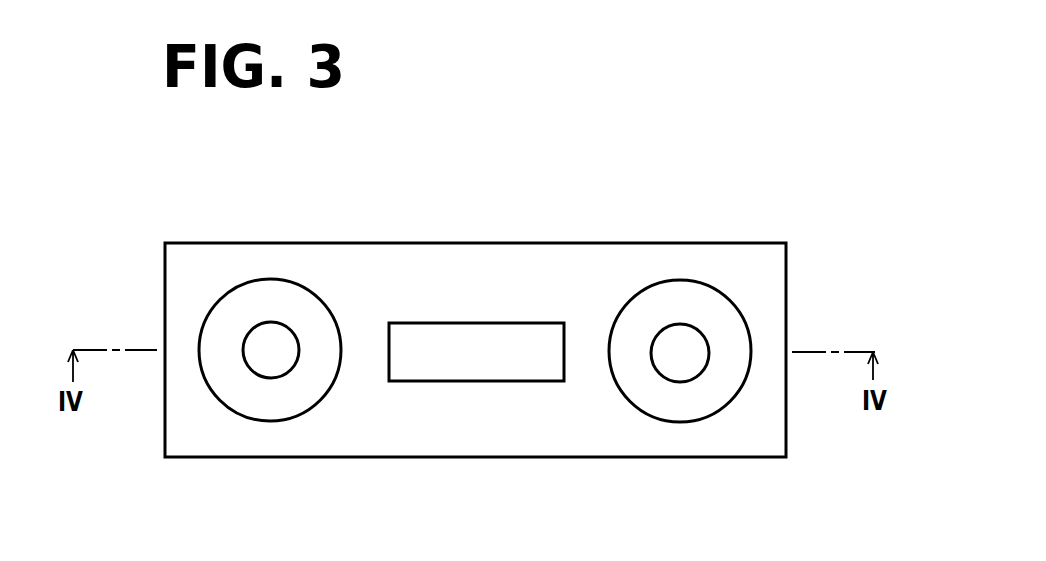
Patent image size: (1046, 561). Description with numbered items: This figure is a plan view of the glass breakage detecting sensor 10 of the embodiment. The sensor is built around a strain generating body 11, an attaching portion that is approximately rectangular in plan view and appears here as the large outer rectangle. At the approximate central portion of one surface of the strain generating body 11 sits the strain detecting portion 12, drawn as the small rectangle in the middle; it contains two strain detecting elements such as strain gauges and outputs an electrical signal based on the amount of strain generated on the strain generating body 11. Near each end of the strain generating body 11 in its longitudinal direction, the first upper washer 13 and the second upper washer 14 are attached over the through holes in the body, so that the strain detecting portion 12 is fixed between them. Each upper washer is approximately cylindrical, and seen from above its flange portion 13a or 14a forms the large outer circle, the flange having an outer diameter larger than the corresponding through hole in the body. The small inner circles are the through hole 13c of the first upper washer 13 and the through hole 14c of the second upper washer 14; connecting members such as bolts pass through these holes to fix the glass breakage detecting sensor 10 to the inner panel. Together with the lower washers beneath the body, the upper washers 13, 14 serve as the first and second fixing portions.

The glass breakage detecting sensor 10 is at (762, 183).
The strain generating body 11 is at (770, 263).
The strain detecting portion 12 is at (467, 368).
The first upper washer 13 is at (272, 279).
The flange portion 13a is at (313, 307).
The through hole 13c is at (297, 366).
The second upper washer 14 is at (680, 282).
The flange portion 14a is at (630, 317).
The through hole 14c is at (660, 371).